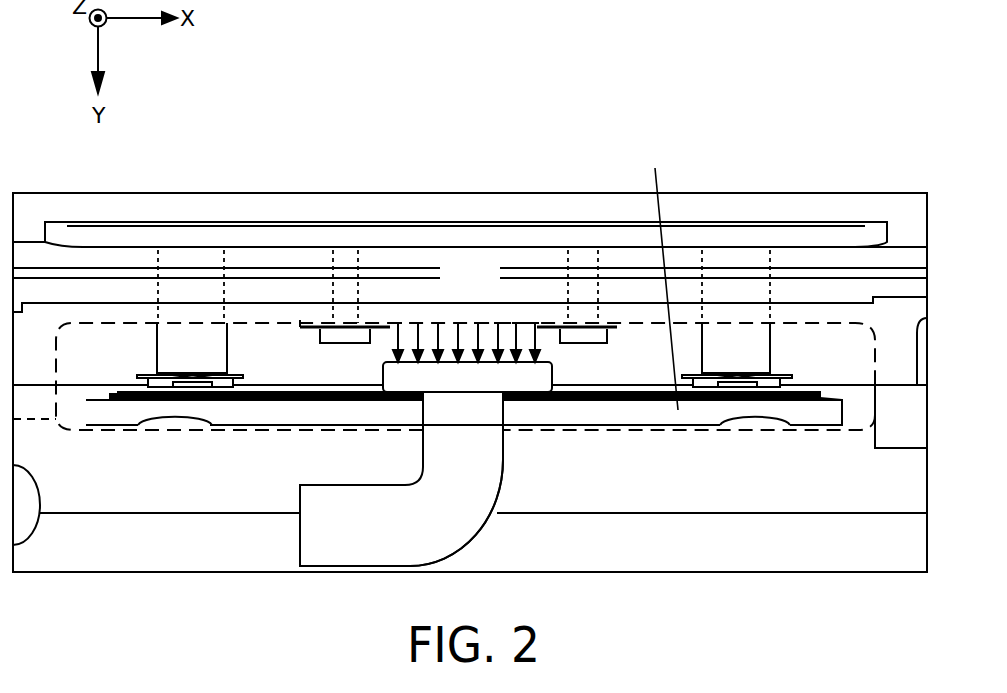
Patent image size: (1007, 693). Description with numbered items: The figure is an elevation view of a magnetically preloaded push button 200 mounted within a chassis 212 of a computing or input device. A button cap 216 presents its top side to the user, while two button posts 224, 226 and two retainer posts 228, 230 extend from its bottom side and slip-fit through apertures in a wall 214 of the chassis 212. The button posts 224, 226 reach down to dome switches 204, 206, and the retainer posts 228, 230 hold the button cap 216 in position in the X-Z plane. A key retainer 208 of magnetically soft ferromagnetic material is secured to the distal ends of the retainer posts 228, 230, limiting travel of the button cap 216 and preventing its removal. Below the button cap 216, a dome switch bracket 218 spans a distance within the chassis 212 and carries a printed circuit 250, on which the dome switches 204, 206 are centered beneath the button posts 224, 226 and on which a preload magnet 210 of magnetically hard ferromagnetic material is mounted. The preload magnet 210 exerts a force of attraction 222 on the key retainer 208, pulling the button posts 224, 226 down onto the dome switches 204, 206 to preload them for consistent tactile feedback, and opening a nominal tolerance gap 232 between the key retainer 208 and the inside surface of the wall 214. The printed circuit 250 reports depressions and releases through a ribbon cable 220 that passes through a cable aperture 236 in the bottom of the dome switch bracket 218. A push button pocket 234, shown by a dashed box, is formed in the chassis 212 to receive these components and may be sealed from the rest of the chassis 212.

The magnetically preloaded push button 200 is at (438, 127).
The dome switch 204 is at (187, 377).
The dome switch 206 is at (740, 377).
The key retainer 208 is at (383, 325).
The preload magnet 210 is at (487, 389).
The chassis 212 is at (627, 487).
The wall 214 is at (490, 287).
The button cap 216 is at (527, 232).
The dome switch bracket 218 is at (655, 168).
The ribbon cable 220 is at (407, 539).
The force of attraction 222 is at (463, 337).
The button post 224 is at (212, 359).
The button post 226 is at (756, 359).
The retainer post 228 is at (330, 335).
The retainer post 230 is at (567, 333).
The tolerance gap 232 is at (620, 323).
The push button pocket 234 is at (283, 430).
The cable aperture 236 is at (462, 417).
The printed circuit 250 is at (277, 393).